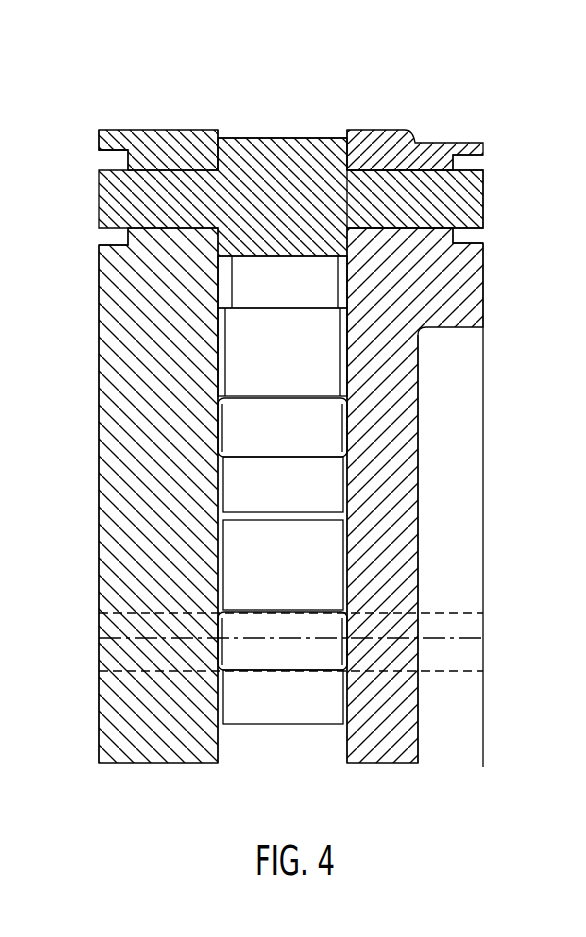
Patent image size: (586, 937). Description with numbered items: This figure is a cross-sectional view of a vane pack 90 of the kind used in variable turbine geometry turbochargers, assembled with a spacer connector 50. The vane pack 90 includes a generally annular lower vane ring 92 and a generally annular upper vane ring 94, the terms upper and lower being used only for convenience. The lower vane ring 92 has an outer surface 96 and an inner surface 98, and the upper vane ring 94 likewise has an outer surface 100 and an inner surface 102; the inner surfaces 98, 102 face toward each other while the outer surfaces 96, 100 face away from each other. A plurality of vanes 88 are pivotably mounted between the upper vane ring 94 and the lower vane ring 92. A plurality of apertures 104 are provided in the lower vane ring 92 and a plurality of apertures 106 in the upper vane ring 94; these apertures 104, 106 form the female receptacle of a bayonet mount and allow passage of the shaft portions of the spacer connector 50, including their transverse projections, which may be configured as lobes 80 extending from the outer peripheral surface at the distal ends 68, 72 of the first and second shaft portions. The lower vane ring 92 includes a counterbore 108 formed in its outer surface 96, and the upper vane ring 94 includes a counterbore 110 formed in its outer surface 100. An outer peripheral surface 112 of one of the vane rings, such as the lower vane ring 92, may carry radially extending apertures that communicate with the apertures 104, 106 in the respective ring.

The spacer connector 50 is at (289, 122).
The distal end of first shaft portion 68 is at (91, 193).
The distal end of second shaft portion 72 is at (496, 189).
The lobe 80 is at (97, 163).
The vane 88 is at (289, 700).
The vane pack 90 is at (250, 80).
The lower vane ring 92 is at (138, 750).
The upper vane ring 94 is at (397, 752).
The outer surface of lower vane ring 96 is at (99, 745).
The inner surface of lower vane ring 98 is at (218, 745).
The outer surface of upper vane ring 100 is at (419, 748).
The inner surface of upper vane ring 102 is at (347, 748).
The aperture in lower vane ring 104 is at (166, 170).
The aperture in upper vane ring 106 is at (388, 170).
The counterbore in lower vane ring 108 is at (113, 148).
The counterbore in upper vane ring 110 is at (468, 248).
The outer peripheral surface of vane ring 112 is at (190, 130).